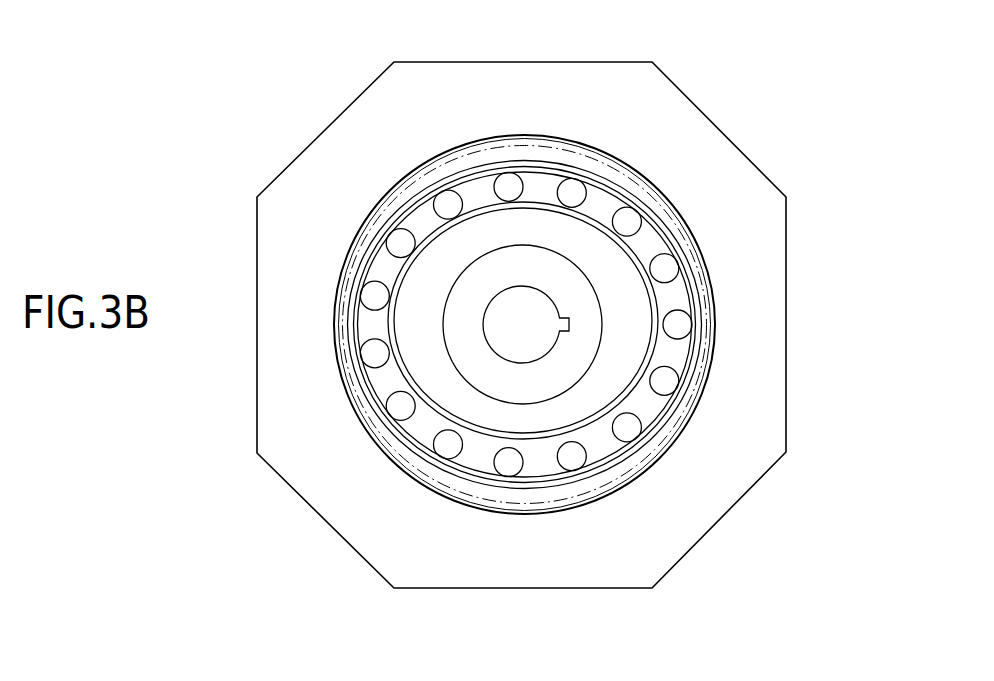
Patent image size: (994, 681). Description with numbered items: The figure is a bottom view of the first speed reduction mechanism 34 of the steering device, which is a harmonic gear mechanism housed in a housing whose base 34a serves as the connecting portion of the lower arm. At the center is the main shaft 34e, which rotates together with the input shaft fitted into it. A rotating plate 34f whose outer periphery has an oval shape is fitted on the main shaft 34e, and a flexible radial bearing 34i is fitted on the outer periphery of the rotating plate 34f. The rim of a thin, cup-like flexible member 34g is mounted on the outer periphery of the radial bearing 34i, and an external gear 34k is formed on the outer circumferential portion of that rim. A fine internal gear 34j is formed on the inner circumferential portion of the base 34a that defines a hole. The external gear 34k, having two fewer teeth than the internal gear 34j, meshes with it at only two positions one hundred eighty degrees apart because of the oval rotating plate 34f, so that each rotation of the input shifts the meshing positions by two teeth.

The first speed reduction mechanism 34 is at (758, 60).
The base 34a is at (768, 227).
The main shaft 34e is at (573, 363).
The rotating plate 34f is at (528, 427).
The flexible member 34g is at (633, 193).
The radial bearing 34i is at (370, 360).
The internal gear 34j is at (447, 165).
The external gear 34k is at (610, 173).